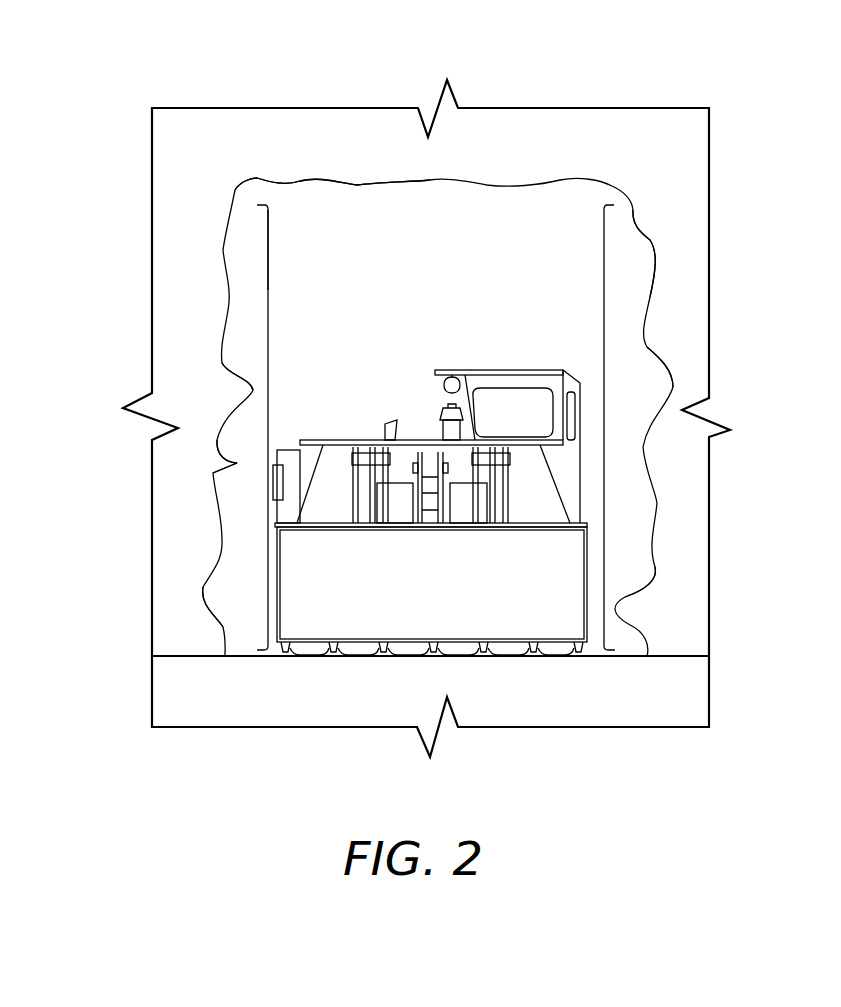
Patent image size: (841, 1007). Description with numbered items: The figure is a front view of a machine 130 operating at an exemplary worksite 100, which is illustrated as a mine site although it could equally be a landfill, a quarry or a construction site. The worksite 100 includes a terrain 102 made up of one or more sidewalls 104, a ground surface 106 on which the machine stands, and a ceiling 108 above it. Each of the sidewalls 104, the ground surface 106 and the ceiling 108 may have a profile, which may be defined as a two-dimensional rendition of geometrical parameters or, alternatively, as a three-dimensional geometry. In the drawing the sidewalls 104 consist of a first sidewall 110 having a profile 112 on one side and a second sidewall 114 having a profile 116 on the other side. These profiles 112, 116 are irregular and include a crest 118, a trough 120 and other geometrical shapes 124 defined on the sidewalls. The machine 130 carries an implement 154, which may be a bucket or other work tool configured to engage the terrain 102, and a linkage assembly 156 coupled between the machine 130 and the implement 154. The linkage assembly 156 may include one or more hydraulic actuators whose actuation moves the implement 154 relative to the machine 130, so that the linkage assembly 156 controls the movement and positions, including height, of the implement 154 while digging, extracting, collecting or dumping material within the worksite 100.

The worksite 100 is at (547, 213).
The terrain 102 is at (320, 216).
The sidewall 104 is at (232, 295).
The ground surface 106 is at (633, 656).
The ceiling 108 is at (356, 212).
The first sidewall 110 is at (643, 245).
The profile 112 is at (603, 298).
The second sidewall 114 is at (234, 246).
The profile 116 is at (268, 290).
The crest 118 is at (240, 382).
The trough 120 is at (203, 578).
The geometrical shape 124 is at (240, 477).
The machine 130 is at (472, 363).
The implement 154 is at (448, 596).
The linkage assembly 156 is at (417, 480).